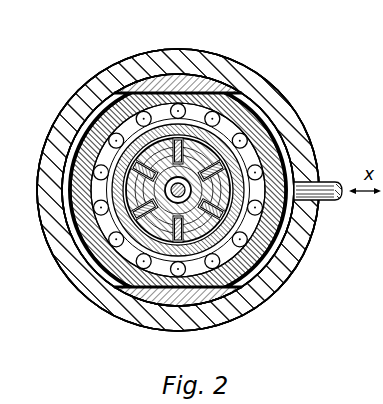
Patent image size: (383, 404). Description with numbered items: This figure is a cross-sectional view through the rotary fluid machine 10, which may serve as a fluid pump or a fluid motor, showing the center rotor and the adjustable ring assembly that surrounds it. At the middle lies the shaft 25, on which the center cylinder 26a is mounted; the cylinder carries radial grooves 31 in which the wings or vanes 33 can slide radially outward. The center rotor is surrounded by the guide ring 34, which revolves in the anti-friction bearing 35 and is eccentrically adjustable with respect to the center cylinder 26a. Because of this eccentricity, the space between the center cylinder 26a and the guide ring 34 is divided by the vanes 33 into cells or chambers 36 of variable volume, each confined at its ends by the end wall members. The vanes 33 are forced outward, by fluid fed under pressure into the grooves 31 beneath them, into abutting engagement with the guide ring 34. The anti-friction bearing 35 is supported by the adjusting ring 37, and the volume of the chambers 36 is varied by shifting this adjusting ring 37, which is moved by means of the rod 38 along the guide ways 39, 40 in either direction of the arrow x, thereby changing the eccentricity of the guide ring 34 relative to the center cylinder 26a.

The housing 10 is at (254, 85).
The shaft 25 is at (304, 249).
The center cylinder 26a is at (138, 186).
The radial grooves 31 is at (113, 272).
The vanes 33 is at (130, 224).
The guide ring 34 is at (278, 289).
The anti-friction bearing 35 is at (250, 132).
The cells or chambers 36 is at (88, 98).
The adjusting ring 37 is at (279, 152).
The rod 38 is at (331, 201).
The guide way 39 is at (175, 78).
The guide way 40 is at (183, 298).